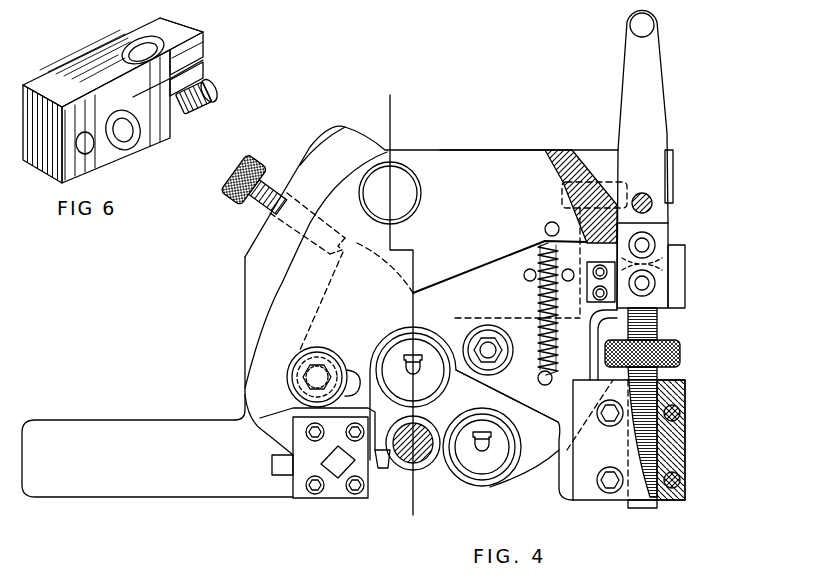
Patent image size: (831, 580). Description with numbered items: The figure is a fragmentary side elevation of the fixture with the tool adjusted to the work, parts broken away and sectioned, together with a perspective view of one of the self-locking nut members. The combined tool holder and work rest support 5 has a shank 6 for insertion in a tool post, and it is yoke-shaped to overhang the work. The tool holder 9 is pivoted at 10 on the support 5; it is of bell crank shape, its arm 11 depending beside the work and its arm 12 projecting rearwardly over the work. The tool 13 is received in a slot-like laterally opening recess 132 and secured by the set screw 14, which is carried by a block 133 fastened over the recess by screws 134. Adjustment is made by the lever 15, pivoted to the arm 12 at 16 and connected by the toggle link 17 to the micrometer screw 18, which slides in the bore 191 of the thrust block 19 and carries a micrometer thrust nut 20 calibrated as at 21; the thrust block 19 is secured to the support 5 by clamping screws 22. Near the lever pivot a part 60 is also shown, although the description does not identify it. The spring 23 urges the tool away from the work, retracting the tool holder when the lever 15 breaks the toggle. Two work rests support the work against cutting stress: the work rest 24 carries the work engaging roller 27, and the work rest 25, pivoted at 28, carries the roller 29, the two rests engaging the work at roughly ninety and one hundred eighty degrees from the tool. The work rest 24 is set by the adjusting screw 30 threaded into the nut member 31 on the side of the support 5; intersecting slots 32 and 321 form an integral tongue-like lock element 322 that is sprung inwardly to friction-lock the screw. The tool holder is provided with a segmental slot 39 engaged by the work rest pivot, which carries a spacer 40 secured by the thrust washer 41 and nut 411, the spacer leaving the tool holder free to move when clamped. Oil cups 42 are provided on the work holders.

In FIG. 6, the nut member 31 is at (98, 55).
In FIG. 6, the slot 321 is at (183, 24).
In FIG. 6, the lock element 322 is at (196, 46).
In FIG. 6, the slot 32 is at (190, 61).
In FIG. 4, the combined tool holder and work rest support 5 is at (317, 163).
In FIG. 4, the shank 6 is at (92, 420).
In FIG. 4, the tool holder 9 is at (382, 99).
In FIG. 4, the pivot 10 is at (391, 177).
In FIG. 4, the arm 11 is at (282, 283).
In FIG. 4, the arm 12 is at (497, 160).
In FIG. 4, the tool 13 is at (381, 470).
In FIG. 4, the set screw 14 is at (337, 500).
In FIG. 4, the recess 132 is at (278, 490).
In FIG. 4, the block 133 is at (300, 500).
In FIG. 4, the screws 134 is at (315, 492).
In FIG. 4, the lever 15 is at (660, 98).
In FIG. 4, the pivot 16 is at (650, 200).
In FIG. 4, the guide slot 60 is at (620, 228).
In FIG. 4, the toggle link 17 is at (660, 263).
In FIG. 4, the micrometer screw 18 is at (659, 326).
In FIG. 4, the thrust block 19 is at (683, 437).
In FIG. 4, the bore 191 is at (660, 460).
In FIG. 4, the micrometer thrust nut 20 is at (682, 353).
In FIG. 4, the calibration 21 is at (660, 375).
In FIG. 4, the clamping screws 22 is at (610, 487).
In FIG. 4, the spring 23 is at (548, 252).
In FIG. 4, the work rest 24 is at (392, 330).
In FIG. 4, the work rest 25 is at (530, 460).
In FIG. 4, the work engaging roller 27 is at (380, 358).
In FIG. 4, the pivot 28 is at (490, 340).
In FIG. 4, the work engaging roller 29 is at (478, 487).
In FIG. 4, the adjusting screw 30 is at (264, 212).
In FIG. 4, the segmental slot 39 is at (350, 378).
In FIG. 4, the spacer 40 is at (298, 367).
In FIG. 4, the thrust washer 41 is at (302, 377).
In FIG. 4, the nut 411 is at (307, 383).
In FIG. 4, the oil cups 42 is at (418, 362).